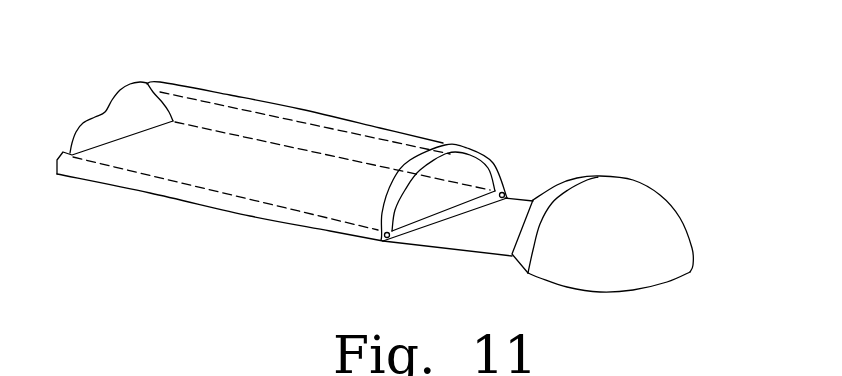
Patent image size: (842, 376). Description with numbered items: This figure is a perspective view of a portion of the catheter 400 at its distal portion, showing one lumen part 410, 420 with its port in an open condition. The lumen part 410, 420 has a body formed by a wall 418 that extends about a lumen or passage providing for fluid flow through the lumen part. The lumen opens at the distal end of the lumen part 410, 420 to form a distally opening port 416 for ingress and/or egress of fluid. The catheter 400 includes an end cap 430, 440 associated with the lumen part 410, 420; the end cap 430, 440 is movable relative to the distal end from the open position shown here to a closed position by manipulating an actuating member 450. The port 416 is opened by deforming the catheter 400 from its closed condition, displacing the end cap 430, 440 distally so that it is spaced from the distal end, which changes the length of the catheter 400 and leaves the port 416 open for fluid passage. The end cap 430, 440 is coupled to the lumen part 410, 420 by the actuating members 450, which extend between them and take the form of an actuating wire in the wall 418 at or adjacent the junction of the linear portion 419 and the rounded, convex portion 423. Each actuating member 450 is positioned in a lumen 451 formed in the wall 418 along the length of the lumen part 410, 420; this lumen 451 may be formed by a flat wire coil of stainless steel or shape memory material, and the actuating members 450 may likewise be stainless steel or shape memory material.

The catheter 400 is at (496, 73).
The lumen part 410 is at (273, 170).
The lumen part 420 is at (190, 204).
The rounded, convex portion 423 is at (193, 110).
The wall 418 is at (453, 152).
The port 416 is at (460, 172).
The linear portion 419 is at (472, 214).
The lumen 451 is at (507, 193).
The actuating member 450 is at (525, 201).
The end cap 430 is at (603, 217).
The end cap 440 is at (637, 198).